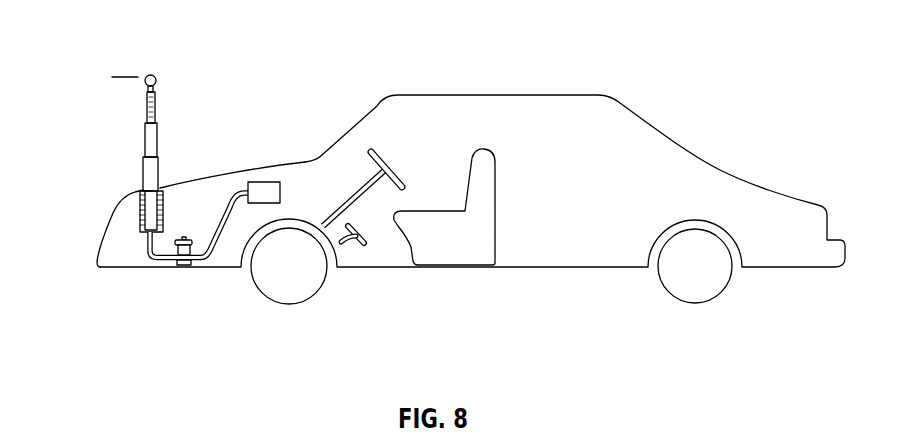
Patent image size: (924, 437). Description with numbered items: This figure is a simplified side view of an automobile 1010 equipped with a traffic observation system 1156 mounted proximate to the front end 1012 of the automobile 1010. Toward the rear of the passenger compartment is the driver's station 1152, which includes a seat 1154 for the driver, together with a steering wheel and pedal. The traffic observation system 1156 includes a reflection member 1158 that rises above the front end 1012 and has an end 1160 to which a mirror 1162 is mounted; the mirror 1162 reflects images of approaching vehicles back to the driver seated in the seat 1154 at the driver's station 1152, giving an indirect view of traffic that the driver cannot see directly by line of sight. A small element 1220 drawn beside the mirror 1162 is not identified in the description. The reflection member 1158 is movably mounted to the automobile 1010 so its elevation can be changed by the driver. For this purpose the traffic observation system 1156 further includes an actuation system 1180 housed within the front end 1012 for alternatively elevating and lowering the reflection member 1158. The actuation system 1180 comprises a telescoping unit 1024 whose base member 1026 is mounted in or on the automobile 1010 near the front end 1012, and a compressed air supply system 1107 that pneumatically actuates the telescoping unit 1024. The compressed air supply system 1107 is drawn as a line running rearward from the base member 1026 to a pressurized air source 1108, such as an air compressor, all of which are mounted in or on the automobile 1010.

The automobile 1010 is at (589, 62).
The front end 1012 is at (120, 217).
The telescoping unit 1024 is at (169, 134).
The base member 1026 is at (142, 229).
The compressed air supply system 1107 is at (232, 239).
The pressurized air source 1108 is at (274, 184).
The driver's station 1152 is at (392, 252).
The seat 1154 is at (475, 253).
The traffic observation system 1156 is at (212, 193).
The reflection member 1158 is at (147, 104).
The end 1160 is at (169, 86).
The mirror 1162 is at (154, 74).
The actuation system 1180 is at (176, 283).
The ground bar 1220 is at (125, 77).